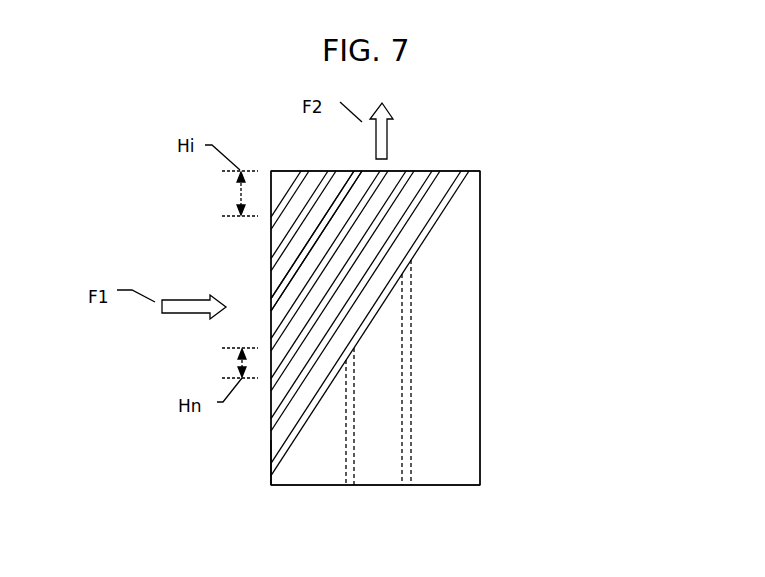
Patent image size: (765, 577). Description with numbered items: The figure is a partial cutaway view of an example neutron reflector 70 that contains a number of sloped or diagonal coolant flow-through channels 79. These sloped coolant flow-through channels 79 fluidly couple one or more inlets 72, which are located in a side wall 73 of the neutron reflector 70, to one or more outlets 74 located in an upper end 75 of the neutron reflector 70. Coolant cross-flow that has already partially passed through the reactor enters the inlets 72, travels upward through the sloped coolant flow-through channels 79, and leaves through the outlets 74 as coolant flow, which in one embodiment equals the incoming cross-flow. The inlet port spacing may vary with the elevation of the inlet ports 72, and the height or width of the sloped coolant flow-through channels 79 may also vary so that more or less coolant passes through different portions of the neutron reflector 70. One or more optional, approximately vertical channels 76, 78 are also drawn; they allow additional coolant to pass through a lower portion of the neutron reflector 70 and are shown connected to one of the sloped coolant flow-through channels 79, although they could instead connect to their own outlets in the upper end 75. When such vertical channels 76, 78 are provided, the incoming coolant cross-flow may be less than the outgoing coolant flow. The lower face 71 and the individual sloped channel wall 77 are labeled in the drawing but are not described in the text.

The neutron reflector 70 is at (526, 195).
The bottom face 71 is at (386, 512).
The inlet 72 is at (238, 472).
The side wall 73 is at (219, 328).
The outlet 74 is at (506, 293).
The upper end 75 is at (356, 137).
The approximately vertical channel 76 is at (360, 400).
The fin 77 is at (252, 318).
The approximately vertical channel 78 is at (416, 378).
The sloped coolant flow-through channel 79 is at (415, 323).